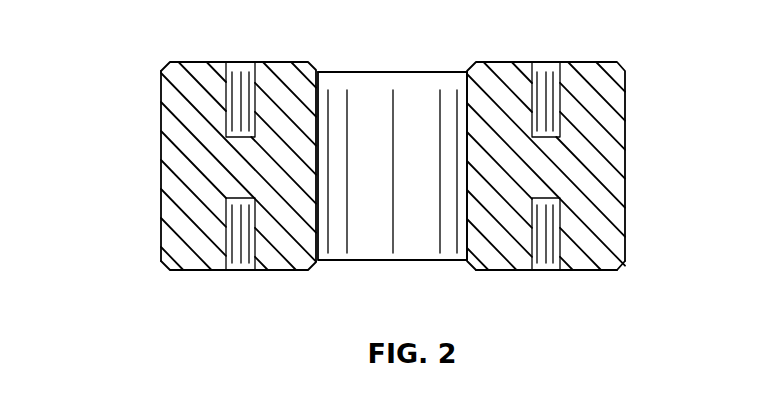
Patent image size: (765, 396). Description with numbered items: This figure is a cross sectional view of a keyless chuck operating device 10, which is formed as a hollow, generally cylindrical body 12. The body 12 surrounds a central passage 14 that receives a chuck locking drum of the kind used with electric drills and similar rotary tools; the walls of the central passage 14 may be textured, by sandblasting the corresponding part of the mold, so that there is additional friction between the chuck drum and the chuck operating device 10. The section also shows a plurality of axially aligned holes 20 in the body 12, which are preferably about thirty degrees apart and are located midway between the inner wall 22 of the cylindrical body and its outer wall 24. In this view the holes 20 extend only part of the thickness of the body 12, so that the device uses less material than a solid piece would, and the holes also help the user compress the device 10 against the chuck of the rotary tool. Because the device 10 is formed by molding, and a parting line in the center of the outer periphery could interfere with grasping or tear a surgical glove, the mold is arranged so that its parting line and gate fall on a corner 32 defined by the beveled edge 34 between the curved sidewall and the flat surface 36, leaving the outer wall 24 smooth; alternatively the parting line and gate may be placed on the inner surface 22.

The keyless chuck operating device 10 is at (131, 60).
The body 12 is at (212, 144).
The central passage 14 is at (320, 260).
The axially aligned holes 20 is at (238, 63).
The inner wall 22 is at (320, 78).
The outer wall 24 is at (160, 175).
The corner 32 is at (618, 271).
The beveled edge 34 is at (624, 264).
The flat surface 36 is at (570, 271).